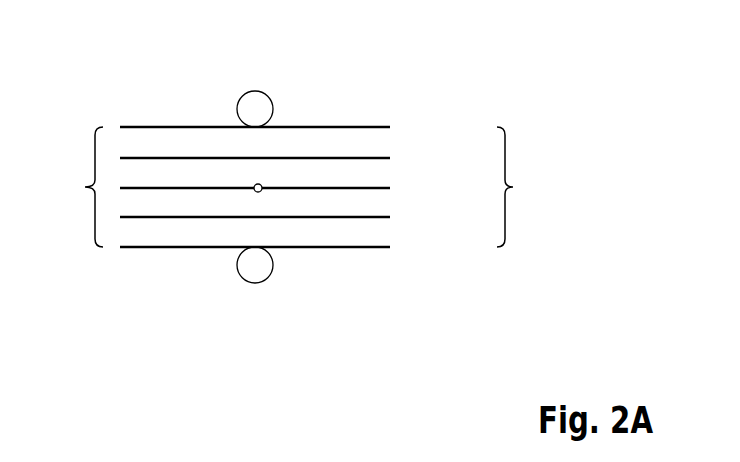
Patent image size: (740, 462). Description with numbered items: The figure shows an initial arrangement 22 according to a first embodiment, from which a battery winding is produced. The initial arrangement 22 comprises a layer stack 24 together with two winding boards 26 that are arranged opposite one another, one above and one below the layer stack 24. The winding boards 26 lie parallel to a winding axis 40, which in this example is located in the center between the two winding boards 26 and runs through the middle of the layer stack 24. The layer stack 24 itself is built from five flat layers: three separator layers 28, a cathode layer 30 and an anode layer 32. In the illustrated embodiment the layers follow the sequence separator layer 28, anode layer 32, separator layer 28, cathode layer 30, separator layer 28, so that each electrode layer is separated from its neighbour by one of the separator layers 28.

The initial arrangement 22 is at (522, 187).
The layer stack 24 is at (77, 187).
The winding boards 26 is at (258, 110).
The separator layer 28 is at (362, 127).
The cathode layer 30 is at (362, 157).
The anode layer 32 is at (362, 218).
The winding axis 40 is at (258, 192).